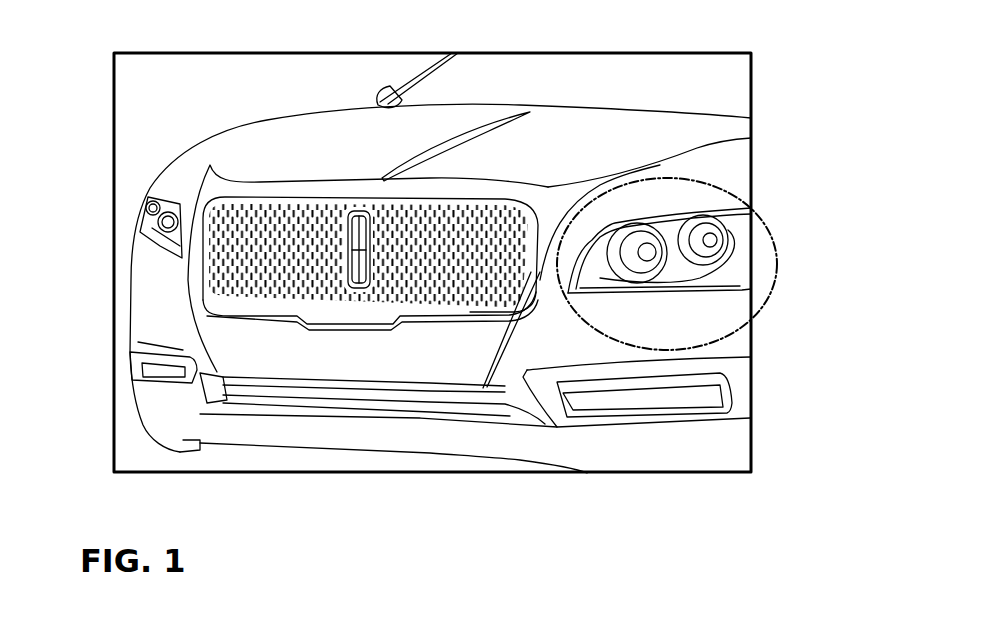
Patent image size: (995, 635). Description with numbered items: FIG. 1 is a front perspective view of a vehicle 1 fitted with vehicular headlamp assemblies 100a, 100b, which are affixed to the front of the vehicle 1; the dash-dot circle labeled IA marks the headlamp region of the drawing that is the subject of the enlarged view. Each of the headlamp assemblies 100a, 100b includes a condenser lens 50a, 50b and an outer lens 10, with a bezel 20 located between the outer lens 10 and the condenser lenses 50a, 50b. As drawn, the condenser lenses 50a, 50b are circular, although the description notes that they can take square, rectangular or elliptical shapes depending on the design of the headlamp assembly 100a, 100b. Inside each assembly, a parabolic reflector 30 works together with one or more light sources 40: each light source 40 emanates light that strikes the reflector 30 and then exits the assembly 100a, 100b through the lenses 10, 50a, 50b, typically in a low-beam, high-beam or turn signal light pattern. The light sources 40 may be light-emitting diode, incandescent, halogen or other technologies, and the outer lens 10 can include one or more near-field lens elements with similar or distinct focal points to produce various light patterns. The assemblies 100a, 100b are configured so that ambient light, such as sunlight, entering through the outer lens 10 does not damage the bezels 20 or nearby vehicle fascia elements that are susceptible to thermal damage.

The vehicle 1 is at (183, 152).
The outer lens 10 is at (742, 185).
The bezel 20 is at (728, 257).
The parabolic reflector 30 is at (642, 251).
The light source 40 is at (703, 242).
The condenser lens 50a is at (655, 275).
The condenser lens 50b is at (706, 250).
The vehicular headlamp assembly 100a is at (693, 205).
The vehicular headlamp assembly 100b is at (710, 240).
The enlarged region IA is at (770, 223).